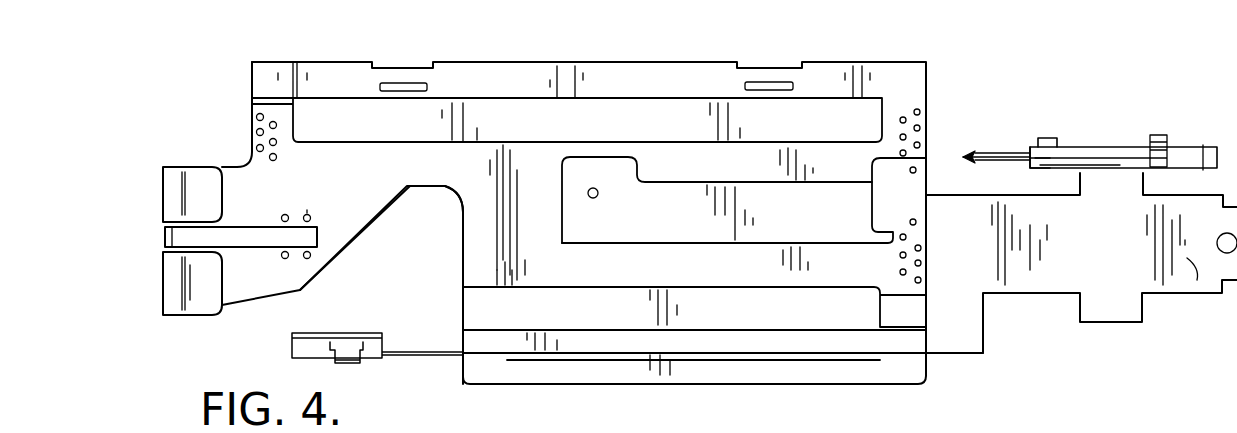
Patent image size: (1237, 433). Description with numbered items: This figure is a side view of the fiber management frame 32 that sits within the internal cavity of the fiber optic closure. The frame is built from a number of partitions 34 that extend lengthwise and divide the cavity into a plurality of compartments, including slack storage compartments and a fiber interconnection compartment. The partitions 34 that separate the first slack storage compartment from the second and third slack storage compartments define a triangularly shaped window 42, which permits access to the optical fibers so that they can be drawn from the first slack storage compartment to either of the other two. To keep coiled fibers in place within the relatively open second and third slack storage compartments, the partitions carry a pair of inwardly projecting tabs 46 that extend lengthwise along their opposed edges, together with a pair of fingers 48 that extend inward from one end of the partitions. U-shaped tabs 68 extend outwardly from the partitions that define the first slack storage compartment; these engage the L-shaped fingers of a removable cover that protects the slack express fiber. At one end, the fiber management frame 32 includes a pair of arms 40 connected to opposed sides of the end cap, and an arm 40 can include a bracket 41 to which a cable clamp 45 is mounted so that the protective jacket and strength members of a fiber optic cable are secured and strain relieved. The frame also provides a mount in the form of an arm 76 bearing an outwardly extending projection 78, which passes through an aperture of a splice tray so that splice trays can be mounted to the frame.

The fiber management frame 32 is at (918, 50).
The partitions 34 is at (283, 182).
The arms 40 is at (1187, 260).
The brackets 41 is at (1113, 175).
The windows 42 is at (432, 257).
The cable clamp 45 is at (1060, 143).
The tabs 46 is at (340, 117).
The fingers 48 is at (197, 303).
The U-shaped tabs 68 is at (408, 88).
The arm 76 is at (695, 213).
The outwardly extending projection 78 is at (595, 188).